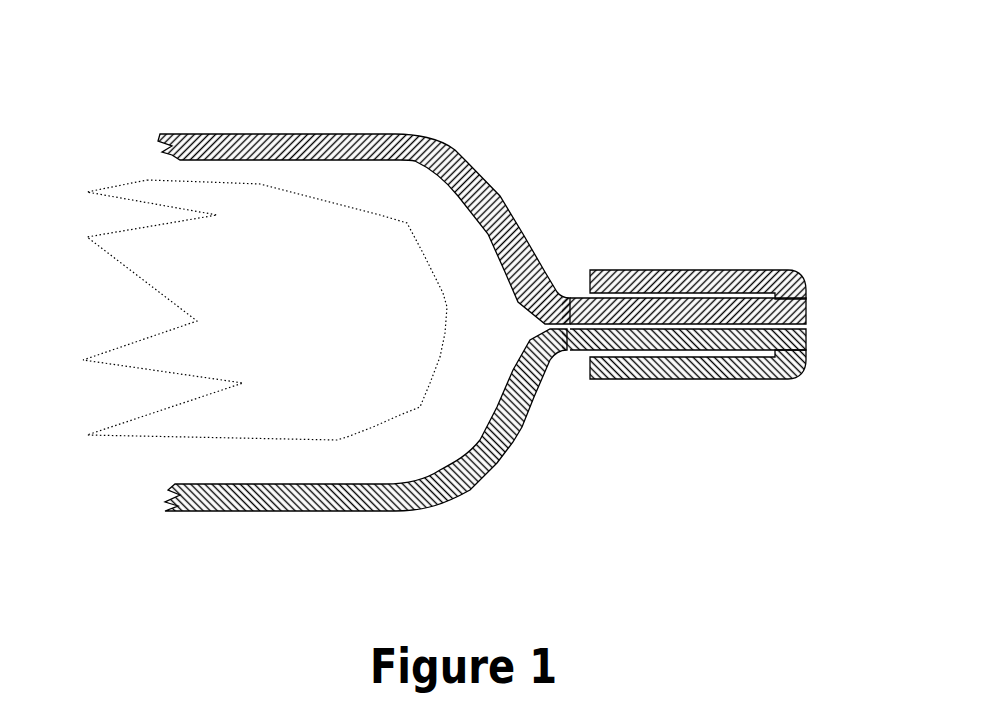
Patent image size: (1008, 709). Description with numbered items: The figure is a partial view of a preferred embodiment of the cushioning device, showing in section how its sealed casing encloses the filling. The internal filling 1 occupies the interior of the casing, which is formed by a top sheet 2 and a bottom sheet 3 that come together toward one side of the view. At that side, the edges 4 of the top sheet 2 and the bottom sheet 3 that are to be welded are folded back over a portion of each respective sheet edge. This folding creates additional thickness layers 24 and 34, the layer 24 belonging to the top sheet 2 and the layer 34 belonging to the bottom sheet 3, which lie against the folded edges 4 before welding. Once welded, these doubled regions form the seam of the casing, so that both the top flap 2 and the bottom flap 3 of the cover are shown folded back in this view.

The internal filling 1 is at (403, 397).
The top sheet 2 is at (513, 198).
The bottom sheet 3 is at (533, 393).
The edges 4 is at (697, 268).
The additional thickness layer 24 is at (750, 270).
The additional thickness layer 34 is at (723, 372).